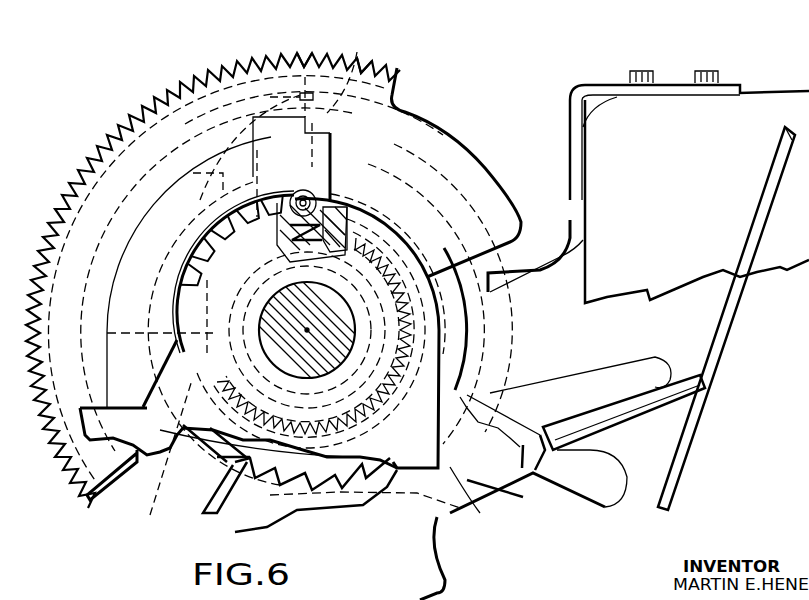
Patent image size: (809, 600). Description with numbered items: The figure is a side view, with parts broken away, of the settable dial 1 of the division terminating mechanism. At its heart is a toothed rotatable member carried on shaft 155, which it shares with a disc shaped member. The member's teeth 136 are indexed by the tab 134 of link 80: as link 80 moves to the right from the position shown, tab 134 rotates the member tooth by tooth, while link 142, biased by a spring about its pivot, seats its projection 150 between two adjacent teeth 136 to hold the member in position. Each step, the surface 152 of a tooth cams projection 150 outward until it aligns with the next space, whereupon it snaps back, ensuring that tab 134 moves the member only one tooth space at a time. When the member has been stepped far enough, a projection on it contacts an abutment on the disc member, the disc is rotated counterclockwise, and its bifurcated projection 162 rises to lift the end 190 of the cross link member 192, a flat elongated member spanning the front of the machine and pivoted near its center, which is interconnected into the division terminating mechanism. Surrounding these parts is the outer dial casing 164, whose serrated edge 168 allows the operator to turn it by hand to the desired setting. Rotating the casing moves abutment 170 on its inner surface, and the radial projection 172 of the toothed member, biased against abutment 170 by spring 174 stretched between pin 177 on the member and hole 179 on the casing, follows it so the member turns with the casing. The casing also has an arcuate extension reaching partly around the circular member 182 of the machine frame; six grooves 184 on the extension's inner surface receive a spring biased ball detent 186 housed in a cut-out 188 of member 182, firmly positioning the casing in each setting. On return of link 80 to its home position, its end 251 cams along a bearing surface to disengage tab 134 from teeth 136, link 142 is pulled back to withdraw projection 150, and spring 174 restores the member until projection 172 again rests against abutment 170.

The drive mechanism 1 is at (185, 78).
The link 80 is at (530, 485).
The tab 134 is at (233, 457).
The teeth 136 is at (342, 487).
The link 142 is at (433, 517).
The projection 150 is at (380, 480).
The tooth surface 152 is at (288, 483).
The shaft 155 is at (345, 323).
The bifurcated projection 162 is at (637, 377).
The outer dial casing 164 is at (365, 112).
The serrated edge 168 is at (80, 177).
The abutment 170 is at (353, 77).
The radial projection 172 is at (305, 77).
The spring 174 is at (440, 352).
The pin 177 is at (433, 177).
The hole 179 is at (139, 447).
The circular member 182 is at (452, 467).
The grooves 184 is at (233, 197).
The spring biased ball detent 186 is at (317, 197).
The cut-out 188 is at (343, 203).
The end of cross link member 190 is at (660, 398).
The cross link member 192 is at (728, 322).
The end of link 251 is at (215, 495).